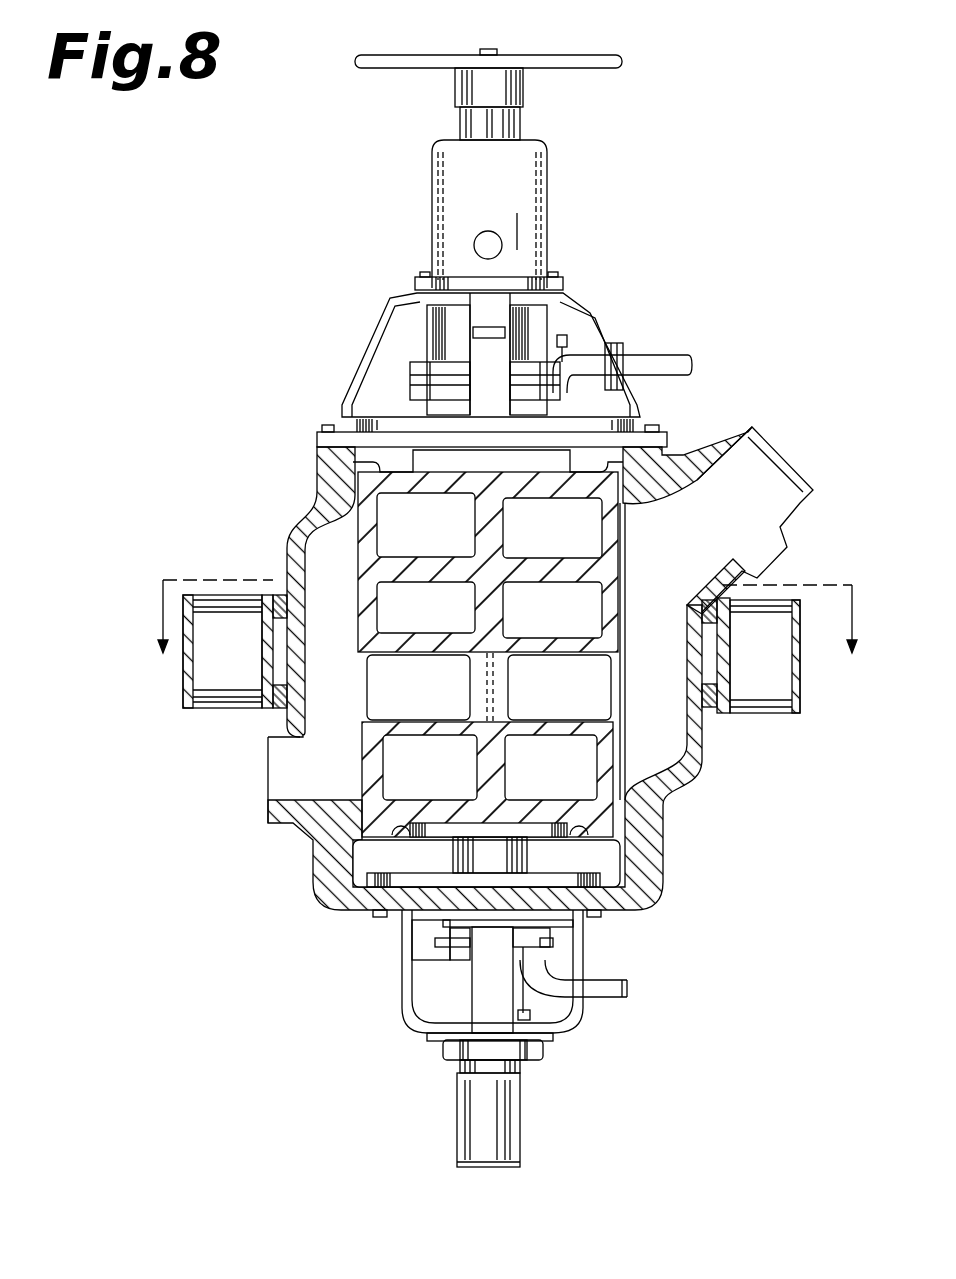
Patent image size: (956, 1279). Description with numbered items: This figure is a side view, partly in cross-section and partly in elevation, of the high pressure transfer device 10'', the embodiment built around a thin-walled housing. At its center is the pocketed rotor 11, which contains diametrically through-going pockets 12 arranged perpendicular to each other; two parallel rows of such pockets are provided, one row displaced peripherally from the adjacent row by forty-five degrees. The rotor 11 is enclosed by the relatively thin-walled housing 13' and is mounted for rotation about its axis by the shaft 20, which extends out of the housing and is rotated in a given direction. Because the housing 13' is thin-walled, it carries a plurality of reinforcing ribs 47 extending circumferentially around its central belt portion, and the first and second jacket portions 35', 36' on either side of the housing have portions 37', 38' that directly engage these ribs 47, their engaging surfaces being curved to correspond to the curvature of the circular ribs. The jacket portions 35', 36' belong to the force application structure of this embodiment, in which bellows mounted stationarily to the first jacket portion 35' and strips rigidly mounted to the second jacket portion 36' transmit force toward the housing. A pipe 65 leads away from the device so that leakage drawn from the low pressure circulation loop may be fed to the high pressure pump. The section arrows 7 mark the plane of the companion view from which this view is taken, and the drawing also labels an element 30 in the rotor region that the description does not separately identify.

The transfer device 10'' is at (569, 561).
The pocketed rotor 11 is at (608, 752).
The diametrically through-going pockets 12 is at (587, 540).
The thin-walled housing 13' is at (540, 668).
The shaft 20 is at (505, 1127).
The rotor 30 is at (503, 677).
The first jacket portion 35' is at (188, 656).
The second jacket portion 36' is at (793, 659).
The engaging portion of first jacket portion 37' is at (234, 630).
The engaging portion of second jacket portion 38' is at (755, 681).
The reinforcing ribs 47 is at (273, 595).
The pipe 65 is at (695, 338).
The section line 7- 7 is at (506, 629).